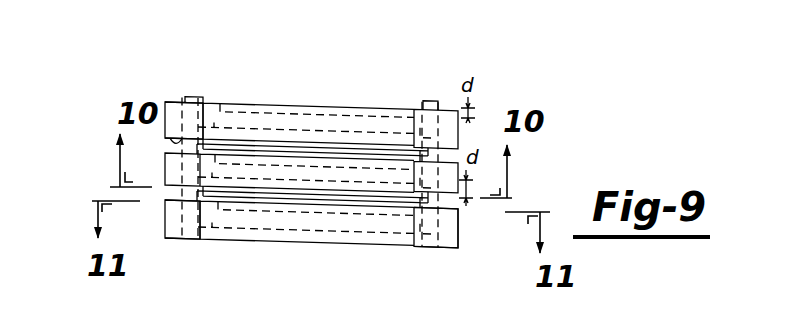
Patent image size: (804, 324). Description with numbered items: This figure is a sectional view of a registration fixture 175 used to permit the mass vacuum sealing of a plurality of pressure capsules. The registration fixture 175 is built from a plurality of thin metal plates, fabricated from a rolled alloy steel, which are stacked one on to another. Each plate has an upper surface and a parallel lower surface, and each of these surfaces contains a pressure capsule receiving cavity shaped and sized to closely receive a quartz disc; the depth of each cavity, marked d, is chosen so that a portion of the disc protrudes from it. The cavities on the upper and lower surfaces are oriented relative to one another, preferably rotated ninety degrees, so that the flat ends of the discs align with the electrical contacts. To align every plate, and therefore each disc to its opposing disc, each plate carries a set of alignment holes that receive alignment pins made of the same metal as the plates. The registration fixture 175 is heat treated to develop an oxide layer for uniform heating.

The registration fixture 175 is at (355, 158).